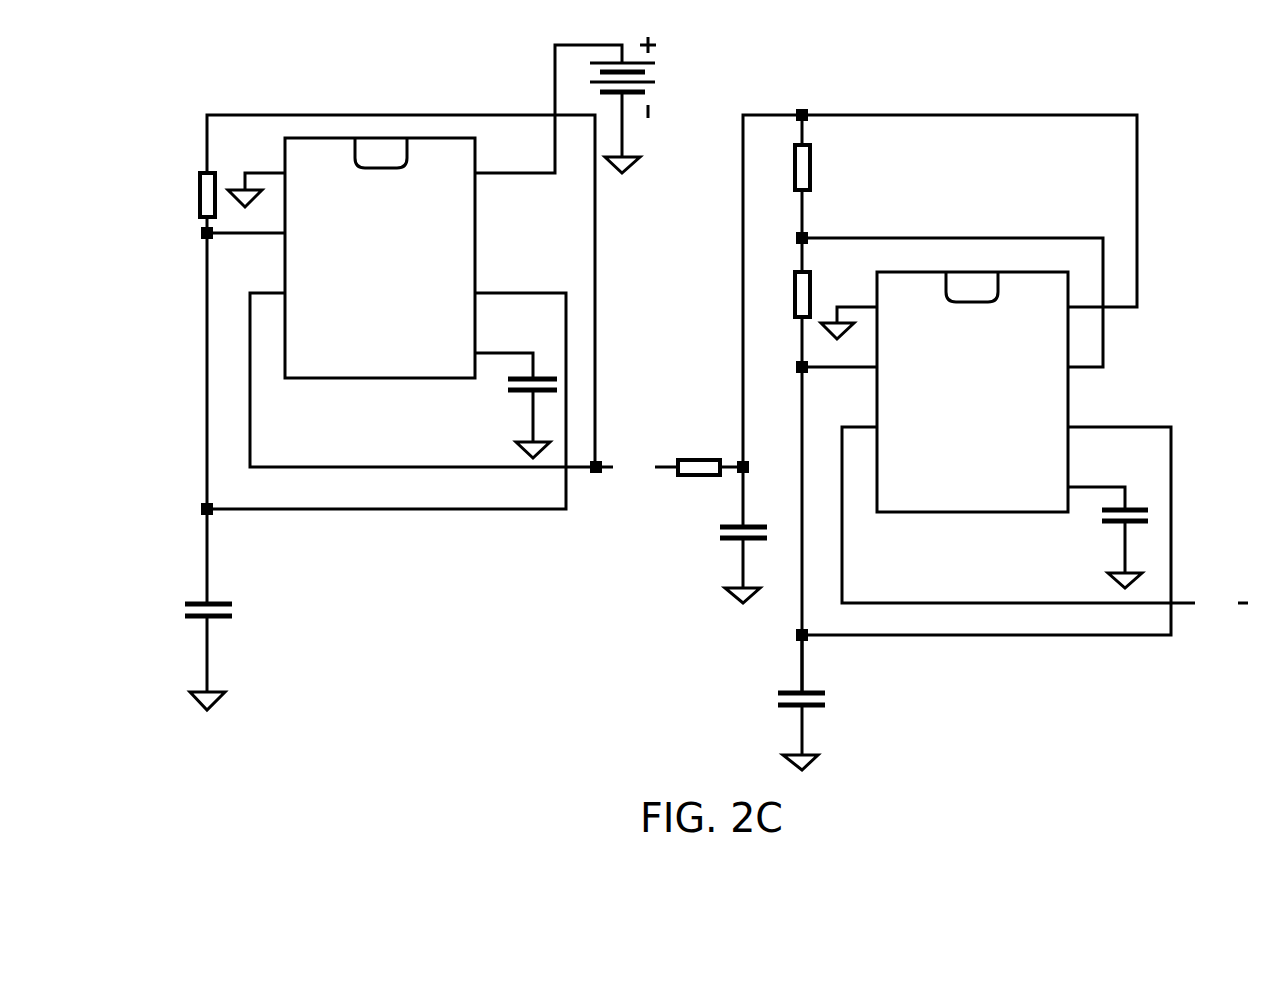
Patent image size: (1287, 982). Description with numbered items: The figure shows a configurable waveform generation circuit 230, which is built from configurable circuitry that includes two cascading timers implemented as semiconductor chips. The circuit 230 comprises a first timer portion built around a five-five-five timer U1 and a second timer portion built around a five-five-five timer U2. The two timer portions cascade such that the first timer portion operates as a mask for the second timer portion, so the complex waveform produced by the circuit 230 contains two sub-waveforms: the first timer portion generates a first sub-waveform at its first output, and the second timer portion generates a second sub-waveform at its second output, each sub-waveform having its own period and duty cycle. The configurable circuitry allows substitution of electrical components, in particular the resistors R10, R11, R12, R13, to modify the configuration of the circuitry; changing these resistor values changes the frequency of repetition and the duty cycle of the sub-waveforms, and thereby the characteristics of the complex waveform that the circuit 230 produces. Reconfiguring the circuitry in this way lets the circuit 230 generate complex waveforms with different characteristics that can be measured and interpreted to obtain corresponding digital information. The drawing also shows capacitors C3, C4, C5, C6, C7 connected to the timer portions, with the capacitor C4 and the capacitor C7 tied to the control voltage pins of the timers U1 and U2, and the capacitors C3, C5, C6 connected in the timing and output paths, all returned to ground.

The configurable waveform generation circuit 230 is at (701, 403).
The first timer U1 is at (380, 258).
The second timer U2 is at (972, 392).
The resistor R10 is at (186, 195).
The resistor R11 is at (699, 454).
The resistor R12 is at (781, 176).
The resistor R13 is at (781, 302).
The capacitor C3 is at (193, 609).
The capacitor C4 is at (516, 405).
The capacitor C5 is at (728, 535).
The capacitor C6 is at (806, 702).
The capacitor C7 is at (1108, 537).